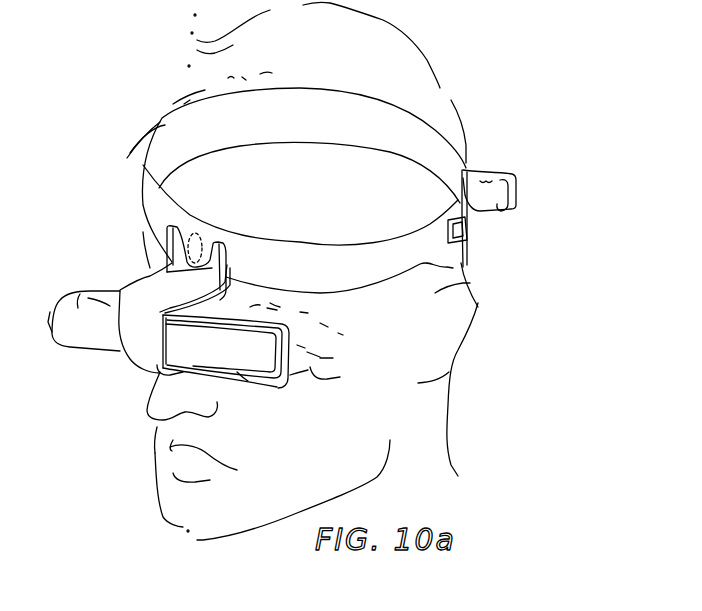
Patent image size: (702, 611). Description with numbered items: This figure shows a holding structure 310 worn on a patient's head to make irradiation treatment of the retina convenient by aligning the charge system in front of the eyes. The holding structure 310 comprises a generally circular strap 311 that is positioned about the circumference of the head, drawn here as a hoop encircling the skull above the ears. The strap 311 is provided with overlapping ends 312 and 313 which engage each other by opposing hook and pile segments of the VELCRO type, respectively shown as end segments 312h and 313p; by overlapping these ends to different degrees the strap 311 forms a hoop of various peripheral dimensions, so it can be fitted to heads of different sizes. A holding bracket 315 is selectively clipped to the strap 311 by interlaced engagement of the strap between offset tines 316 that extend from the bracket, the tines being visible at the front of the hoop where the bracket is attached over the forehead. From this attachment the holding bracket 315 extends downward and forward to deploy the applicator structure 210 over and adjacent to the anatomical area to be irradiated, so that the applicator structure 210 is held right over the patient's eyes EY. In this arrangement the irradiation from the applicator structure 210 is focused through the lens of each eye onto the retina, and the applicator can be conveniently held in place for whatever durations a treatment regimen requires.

The holding structure 310 is at (319, 259).
The strap 311 is at (453, 268).
The overlapping end 312 is at (495, 239).
The hook end segment 312h is at (467, 227).
The overlapping end 313 is at (528, 202).
The pile end segment 313p is at (509, 184).
The holding bracket 315 is at (150, 278).
The offset tines 316 is at (172, 206).
The applicator structure 210 is at (247, 383).
The eyes EY is at (400, 374).